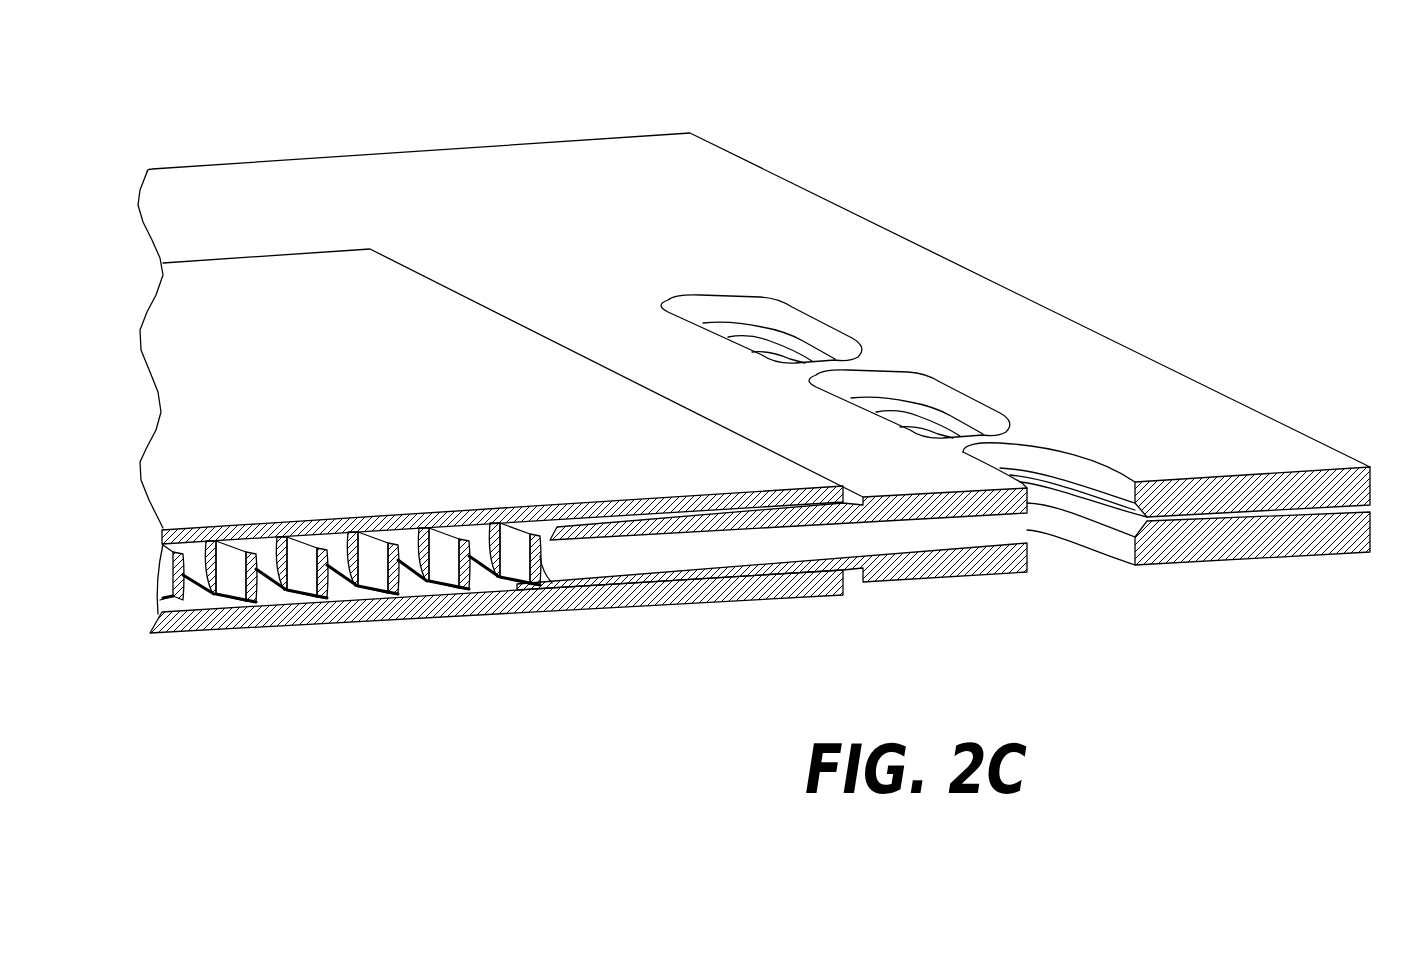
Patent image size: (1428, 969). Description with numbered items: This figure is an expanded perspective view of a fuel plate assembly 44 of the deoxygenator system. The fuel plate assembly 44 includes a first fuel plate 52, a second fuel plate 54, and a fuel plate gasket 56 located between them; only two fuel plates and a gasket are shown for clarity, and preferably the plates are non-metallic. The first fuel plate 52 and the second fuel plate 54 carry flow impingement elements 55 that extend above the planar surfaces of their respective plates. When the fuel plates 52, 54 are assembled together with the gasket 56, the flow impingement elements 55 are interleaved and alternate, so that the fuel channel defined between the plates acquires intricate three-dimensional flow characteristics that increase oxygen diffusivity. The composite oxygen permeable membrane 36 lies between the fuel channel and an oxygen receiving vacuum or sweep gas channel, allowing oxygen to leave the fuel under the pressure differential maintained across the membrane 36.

The fuel plate assembly 44 is at (903, 155).
The composite oxygen permeable membrane 36 is at (163, 541).
The flow impingement elements 55 is at (400, 580).
The first fuel plate 52 is at (1110, 362).
The second fuel plate 54 is at (1260, 543).
The fuel plate gasket 56 is at (1368, 507).